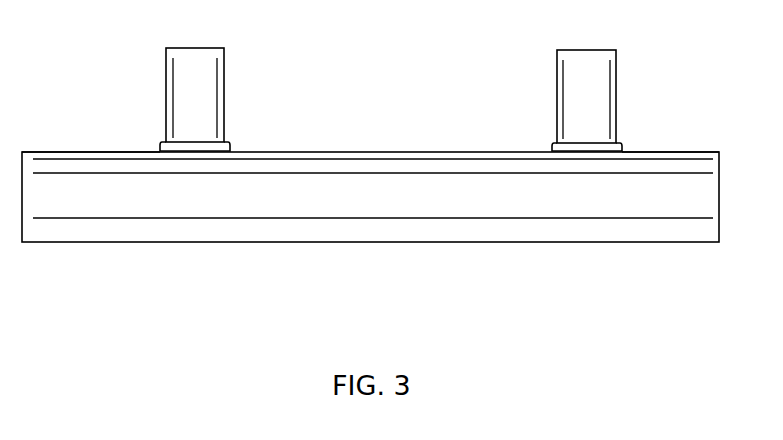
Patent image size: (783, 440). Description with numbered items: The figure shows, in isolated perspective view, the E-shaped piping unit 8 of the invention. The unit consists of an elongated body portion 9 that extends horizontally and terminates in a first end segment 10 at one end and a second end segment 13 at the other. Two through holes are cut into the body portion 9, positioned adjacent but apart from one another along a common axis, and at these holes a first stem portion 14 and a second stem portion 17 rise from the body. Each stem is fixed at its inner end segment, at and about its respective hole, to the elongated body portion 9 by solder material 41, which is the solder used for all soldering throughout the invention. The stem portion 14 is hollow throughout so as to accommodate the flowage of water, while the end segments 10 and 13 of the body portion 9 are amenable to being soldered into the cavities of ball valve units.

The E-shaped piping unit 8 is at (388, 168).
The elongated body portion 9 is at (318, 159).
The first end segment 10 is at (70, 154).
The second end segment 13 is at (698, 154).
The first stem portion 14 is at (166, 70).
The second stem portion 17 is at (564, 78).
The solder material 41 is at (230, 150).